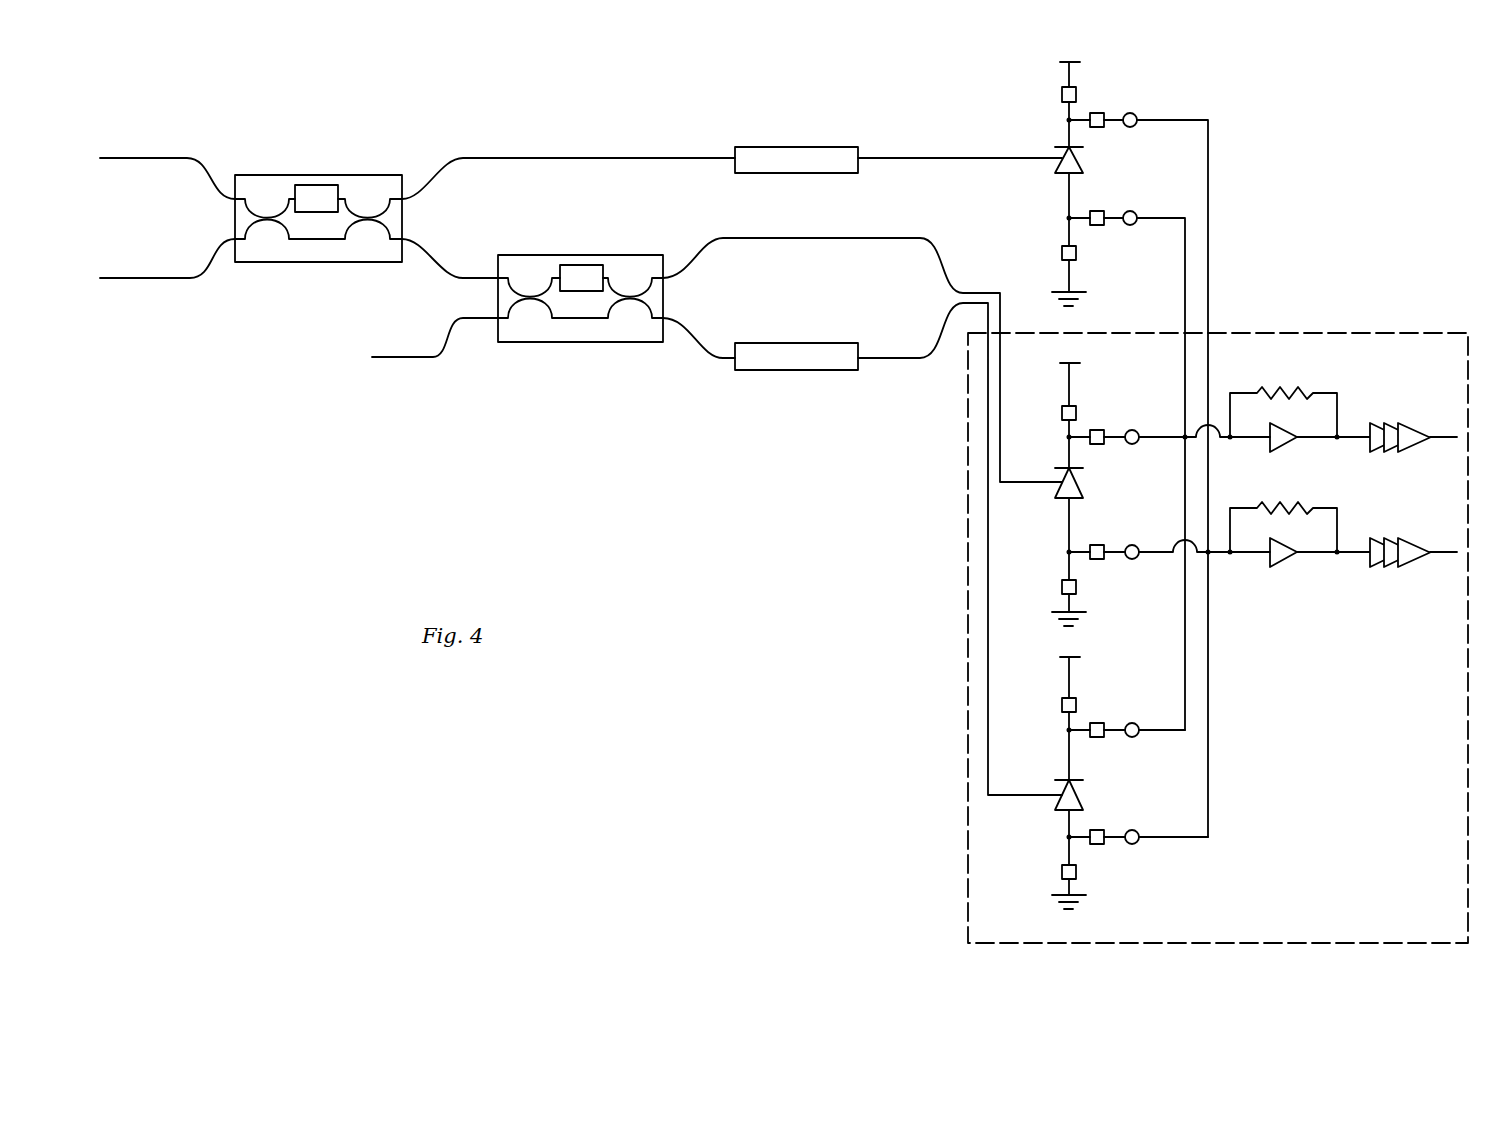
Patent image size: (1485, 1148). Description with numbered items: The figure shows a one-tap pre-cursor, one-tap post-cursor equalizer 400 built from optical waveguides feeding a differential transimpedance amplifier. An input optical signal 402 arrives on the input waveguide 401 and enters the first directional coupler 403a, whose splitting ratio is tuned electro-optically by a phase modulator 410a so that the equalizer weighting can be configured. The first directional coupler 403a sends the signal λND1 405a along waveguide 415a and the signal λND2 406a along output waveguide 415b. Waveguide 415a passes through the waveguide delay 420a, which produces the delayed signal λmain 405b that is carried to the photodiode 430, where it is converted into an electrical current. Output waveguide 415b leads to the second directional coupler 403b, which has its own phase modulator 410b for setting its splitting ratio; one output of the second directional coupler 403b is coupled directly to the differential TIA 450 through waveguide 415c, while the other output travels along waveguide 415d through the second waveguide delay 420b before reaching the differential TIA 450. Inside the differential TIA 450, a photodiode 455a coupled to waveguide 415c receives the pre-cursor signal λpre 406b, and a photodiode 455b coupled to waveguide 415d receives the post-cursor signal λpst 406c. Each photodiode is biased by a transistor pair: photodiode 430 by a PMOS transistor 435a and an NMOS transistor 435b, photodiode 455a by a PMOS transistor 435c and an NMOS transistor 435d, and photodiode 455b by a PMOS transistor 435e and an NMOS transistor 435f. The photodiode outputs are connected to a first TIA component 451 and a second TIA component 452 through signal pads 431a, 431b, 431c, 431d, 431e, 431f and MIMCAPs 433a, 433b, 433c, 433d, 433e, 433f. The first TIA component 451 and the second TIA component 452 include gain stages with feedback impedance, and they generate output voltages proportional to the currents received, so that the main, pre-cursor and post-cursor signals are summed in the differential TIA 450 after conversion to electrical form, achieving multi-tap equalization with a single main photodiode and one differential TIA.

The one-tap pre-cursor equalizer 400 is at (1325, 92).
The input waveguide 401 is at (178, 157).
The input optical signal 402 is at (133, 122).
The first directional coupler 403a is at (385, 175).
The second directional coupler 403b is at (648, 253).
The signal λND1 405a is at (517, 128).
The delayed signal λmain 405b is at (923, 130).
The signal λND2 406a is at (472, 213).
The signal λpre 406b is at (902, 212).
The signal λpst 406c is at (893, 395).
The phase modulator 410a is at (317, 185).
The phase modulator 410b is at (578, 265).
The waveguide 415a is at (648, 158).
The output waveguide 415b is at (456, 278).
The waveguide 415c is at (747, 237).
The waveguide 415d is at (710, 355).
The waveguide delay 420a is at (797, 147).
The second waveguide delay 420b is at (797, 343).
The photodiode 430 is at (1083, 162).
The signal pad 431a is at (1097, 112).
The signal pad 431b is at (1097, 211).
The signal pad 431c is at (1096, 430).
The signal pad 431d is at (1097, 545).
The signal pad 431e is at (1096, 723).
The signal pad 431f is at (1097, 830).
The MIMCAP 433a is at (1136, 113).
The MIMCAP 433b is at (1131, 225).
The MIMCAP 433c is at (1132, 445).
The MIMCAP 433d is at (1132, 560).
The MIMCAP 433e is at (1132, 738).
The MIMCAP 433f is at (1132, 845).
The transistor 435a is at (1063, 95).
The transistor 435b is at (1062, 253).
The transistor 435c is at (1062, 410).
The transistor 435d is at (1062, 585).
The transistor 435e is at (1062, 702).
The transistor 435f is at (1062, 870).
The differential TIA 450 is at (1388, 333).
The first TIA component 451 is at (1283, 448).
The second TIA component 452 is at (1283, 563).
The photodiode 455a is at (1061, 499).
The photodiode 455b is at (1061, 811).